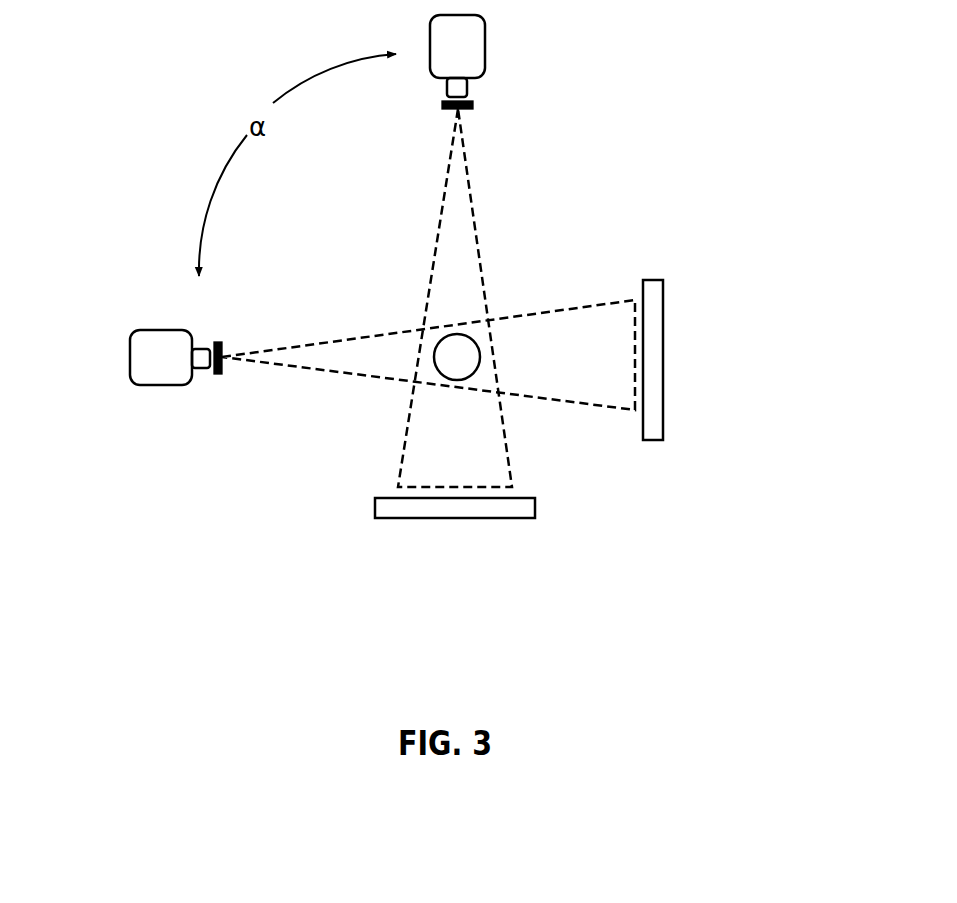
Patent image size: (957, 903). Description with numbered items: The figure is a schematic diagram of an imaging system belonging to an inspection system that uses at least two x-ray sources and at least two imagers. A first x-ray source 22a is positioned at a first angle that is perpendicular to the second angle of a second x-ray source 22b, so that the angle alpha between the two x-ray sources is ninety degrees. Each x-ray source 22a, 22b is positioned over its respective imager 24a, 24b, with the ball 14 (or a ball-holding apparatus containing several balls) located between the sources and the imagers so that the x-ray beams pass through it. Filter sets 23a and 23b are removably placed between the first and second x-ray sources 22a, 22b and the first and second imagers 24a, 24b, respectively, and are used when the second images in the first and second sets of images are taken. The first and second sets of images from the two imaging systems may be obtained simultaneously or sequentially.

The ball 14 is at (430, 358).
The first x-ray source 22a is at (497, 52).
The second x-ray source 22b is at (118, 343).
The first filter set 23a is at (480, 103).
The second filter set 23b is at (225, 340).
The first imager 24a is at (430, 518).
The second imager 24b is at (680, 368).